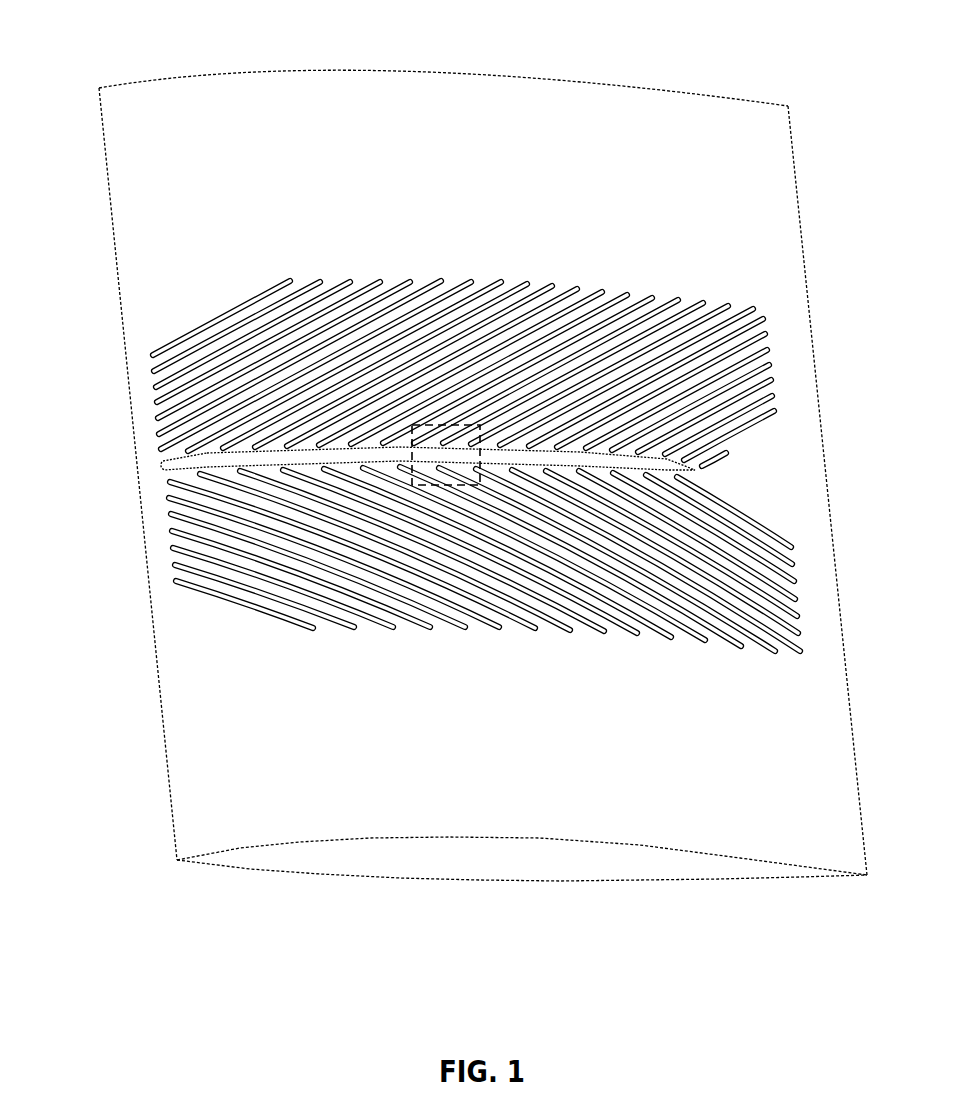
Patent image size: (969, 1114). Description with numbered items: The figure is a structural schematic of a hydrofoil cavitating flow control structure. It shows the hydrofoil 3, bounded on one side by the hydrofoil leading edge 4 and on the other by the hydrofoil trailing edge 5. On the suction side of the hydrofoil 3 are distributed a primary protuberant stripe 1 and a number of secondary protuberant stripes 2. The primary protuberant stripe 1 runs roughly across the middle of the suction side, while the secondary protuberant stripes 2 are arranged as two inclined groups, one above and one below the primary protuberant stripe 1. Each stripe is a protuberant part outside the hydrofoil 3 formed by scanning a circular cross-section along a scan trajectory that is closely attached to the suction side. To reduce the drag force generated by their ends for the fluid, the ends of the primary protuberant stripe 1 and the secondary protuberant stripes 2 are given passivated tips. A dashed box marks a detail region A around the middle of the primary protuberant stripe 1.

The primary protuberant stripe 1 is at (202, 464).
The secondary protuberant stripe 2 is at (461, 274).
The hydrofoil 3 is at (370, 137).
The hydrofoil leading edge 4 is at (126, 116).
The hydrofoil trailing edge 5 is at (774, 116).
The detail region A is at (436, 415).